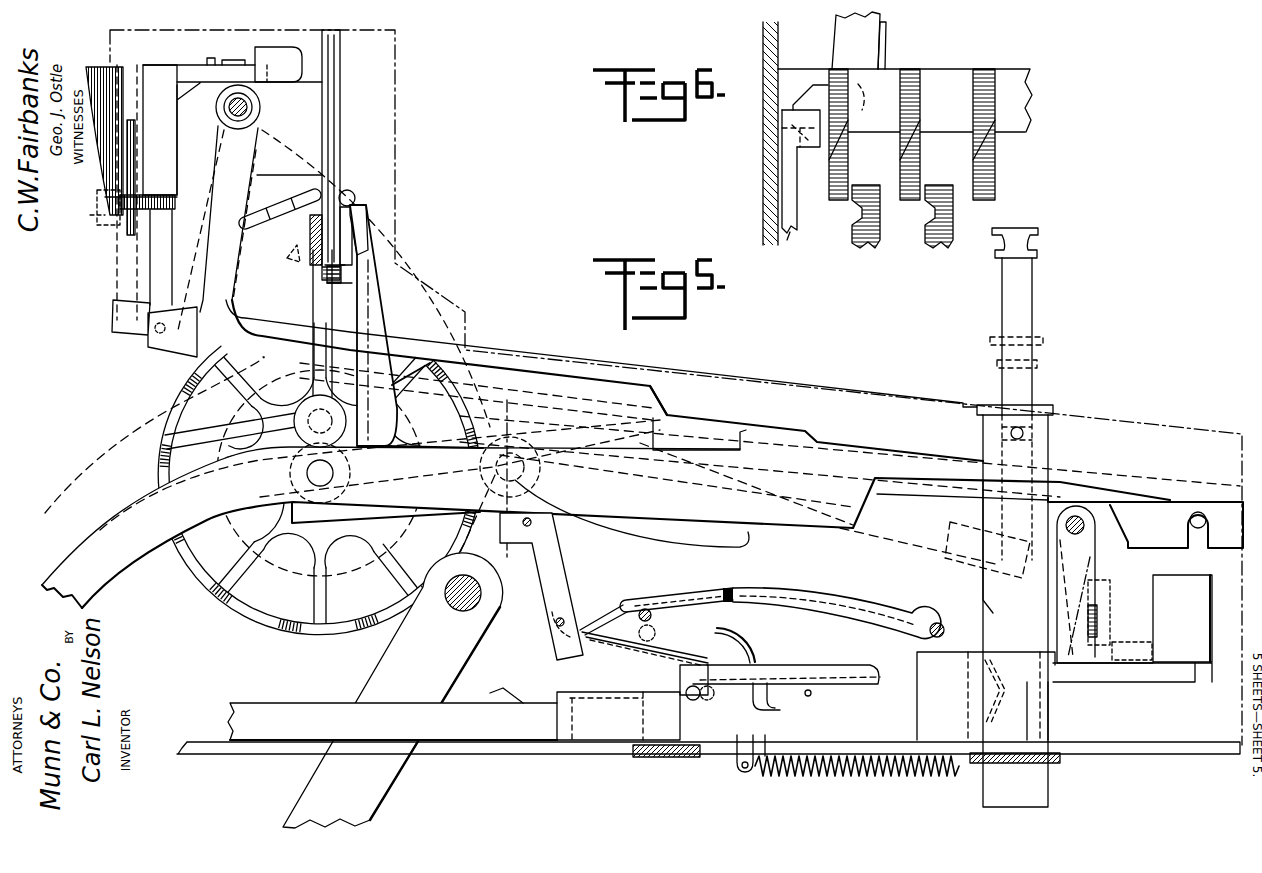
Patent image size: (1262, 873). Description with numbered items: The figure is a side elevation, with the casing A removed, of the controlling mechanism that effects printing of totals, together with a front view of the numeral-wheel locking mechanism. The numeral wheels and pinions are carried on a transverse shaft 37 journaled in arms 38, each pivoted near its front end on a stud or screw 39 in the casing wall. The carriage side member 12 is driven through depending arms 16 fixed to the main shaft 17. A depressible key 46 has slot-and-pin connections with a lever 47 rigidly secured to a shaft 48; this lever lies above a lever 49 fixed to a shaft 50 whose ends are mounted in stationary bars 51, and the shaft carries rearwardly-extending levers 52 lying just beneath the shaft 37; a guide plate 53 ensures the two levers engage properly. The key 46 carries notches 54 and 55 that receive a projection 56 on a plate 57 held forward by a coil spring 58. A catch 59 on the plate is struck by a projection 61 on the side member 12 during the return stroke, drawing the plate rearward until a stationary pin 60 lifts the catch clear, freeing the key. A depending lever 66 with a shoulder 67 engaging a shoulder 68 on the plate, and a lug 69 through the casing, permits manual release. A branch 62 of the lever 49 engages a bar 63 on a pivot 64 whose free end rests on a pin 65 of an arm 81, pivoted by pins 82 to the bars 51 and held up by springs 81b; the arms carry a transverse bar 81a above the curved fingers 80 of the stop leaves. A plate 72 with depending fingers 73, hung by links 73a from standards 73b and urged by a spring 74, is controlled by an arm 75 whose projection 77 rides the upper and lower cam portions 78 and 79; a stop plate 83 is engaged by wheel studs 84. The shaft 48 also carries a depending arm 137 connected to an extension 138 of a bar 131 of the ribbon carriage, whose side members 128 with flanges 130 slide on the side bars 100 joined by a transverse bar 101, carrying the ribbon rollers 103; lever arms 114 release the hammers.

In FIG. 5, the side member 12 is at (392, 721).
In FIG. 5, the depending arm 16 is at (708, 708).
In FIG. 5, the main shaft 17 is at (463, 612).
In FIG. 5, the transversely-extending shaft 37 is at (316, 473).
In FIG. 5, the arm 38 is at (1178, 486).
In FIG. 5, the stud or screw 39 is at (1201, 510).
In FIG. 5, the depressible key 46 is at (1010, 301).
In FIG. 5, the lever 47 is at (833, 402).
In FIG. 5, the shaft 48 is at (262, 108).
In FIG. 5, the lever 49 is at (630, 440).
In FIG. 5, the shaft 50 is at (507, 446).
In FIG. 5, the bar 51 is at (548, 566).
In FIG. 5, the rearwardly-extending lever 52 is at (308, 516).
In FIG. 5, the guide plate 53 is at (668, 414).
In FIG. 5, the notch 54 is at (985, 573).
In FIG. 5, the notch 55 is at (985, 606).
In FIG. 5, the projection 56 is at (975, 682).
In FIG. 5, the plate 57 is at (986, 696).
In FIG. 5, the coil spring 58 is at (855, 777).
In FIG. 5, the catch 59 is at (862, 690).
In FIG. 5, the stationary pin 60 is at (807, 697).
In FIG. 5, the projection 61 is at (494, 690).
In FIG. 5, the branch 62 is at (656, 540).
In FIG. 5, the bar 63 is at (803, 594).
In FIG. 5, the pivot 64 is at (930, 630).
In FIG. 5, the pin 65 is at (656, 620).
In FIG. 5, the depending lever 66 is at (1085, 566).
In FIG. 5, the shoulder 67 is at (1064, 711).
In FIG. 5, the shoulder 68 is at (1053, 662).
In FIG. 5, the lug 69 is at (1100, 620).
In FIG. 6, the longitudinally-movable plate 72 is at (1014, 82).
In FIG. 5, the longitudinally-movable plate 72 is at (353, 223).
In FIG. 6, the depending finger 73 is at (921, 162).
In FIG. 5, the depending finger 73 is at (366, 245).
In FIG. 6, the link 73a is at (835, 42).
In FIG. 6, the stationary standard 73b is at (888, 50).
In FIG. 5, the spring 74 is at (356, 199).
In FIG. 6, the upwardly-extending arm 75 is at (789, 234).
In FIG. 5, the upwardly-extending arm 75 is at (380, 313).
In FIG. 6, the laterally-extending projection 77 is at (806, 171).
In FIG. 5, the laterally-extending projection 77 is at (327, 287).
In FIG. 6, the upper cam portion 78 is at (805, 90).
In FIG. 6, the lower cam portion 79 is at (790, 134).
In FIG. 5, the curved finger 80 is at (752, 644).
In FIG. 5, the arm 81 is at (603, 604).
In FIG. 5, the transverse bar 81a is at (716, 596).
In FIG. 5, the spring 81b is at (648, 666).
In FIG. 5, the pin 82 is at (556, 624).
In FIG. 5, the transverse plate 83 is at (309, 235).
In FIG. 5, the stud or projection 84 is at (289, 265).
In FIG. 5, the side bar 100 is at (312, 72).
In FIG. 5, the transverse bar 101 is at (281, 58).
In FIG. 5, the roller 103 is at (98, 186).
In FIG. 5, the lever arm 114 is at (272, 210).
In FIG. 5, the side member 128 is at (190, 72).
In FIG. 5, the flange 130 is at (228, 64).
In FIG. 5, the bar 131 is at (153, 80).
In FIG. 5, the depending arm 137 is at (172, 352).
In FIG. 5, the extension 138 is at (157, 265).
In FIG. 6, the outside casing A is at (765, 186).
In FIG. 6, the type blocks E is at (940, 248).